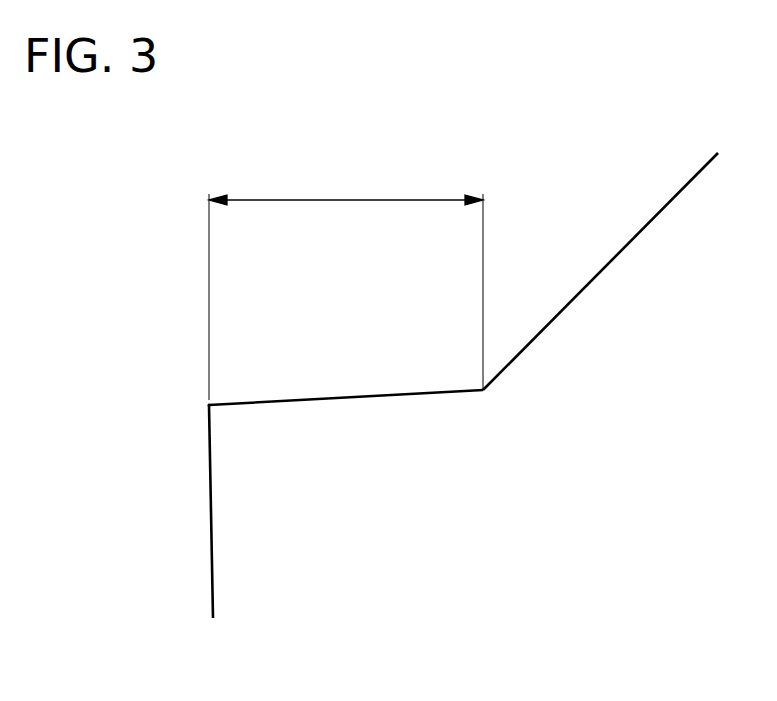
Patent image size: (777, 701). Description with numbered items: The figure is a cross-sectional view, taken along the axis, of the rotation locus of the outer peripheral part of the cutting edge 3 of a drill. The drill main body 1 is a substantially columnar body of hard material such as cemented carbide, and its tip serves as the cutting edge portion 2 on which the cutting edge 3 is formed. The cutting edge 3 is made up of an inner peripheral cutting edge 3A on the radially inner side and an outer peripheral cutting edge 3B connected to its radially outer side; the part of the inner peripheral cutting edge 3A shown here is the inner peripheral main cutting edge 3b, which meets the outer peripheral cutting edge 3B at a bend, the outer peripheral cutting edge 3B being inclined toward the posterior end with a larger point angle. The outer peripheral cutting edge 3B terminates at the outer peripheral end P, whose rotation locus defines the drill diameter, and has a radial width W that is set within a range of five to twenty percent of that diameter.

The cutting edge 3 is at (643, 137).
The outer peripheral cutting edge 3B is at (357, 395).
The inner peripheral cutting edge 3A is at (593, 275).
The inner peripheral main cutting edge 3b is at (600, 271).
The drill main body 1 is at (165, 524).
The cutting edge portion 2 is at (211, 511).
The outer peripheral end P is at (209, 405).
The radial width W is at (346, 286).